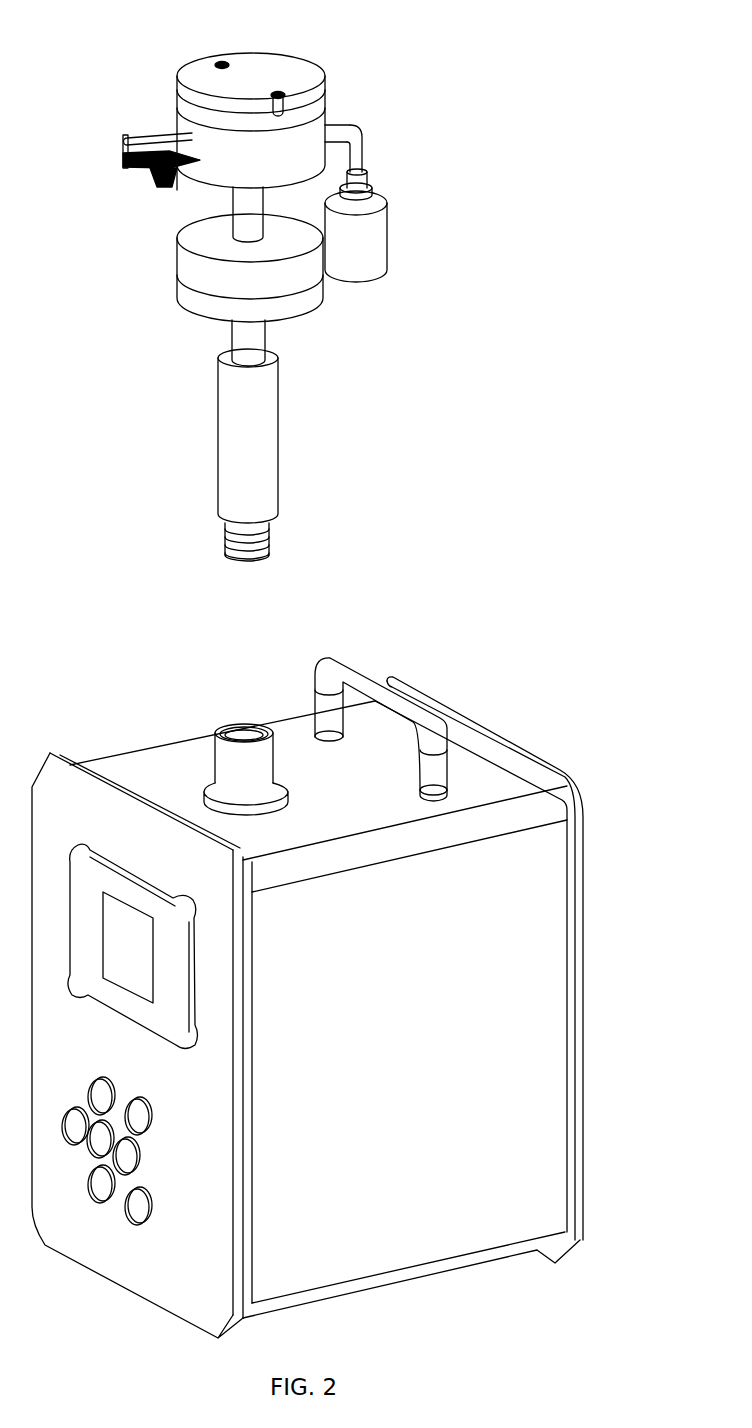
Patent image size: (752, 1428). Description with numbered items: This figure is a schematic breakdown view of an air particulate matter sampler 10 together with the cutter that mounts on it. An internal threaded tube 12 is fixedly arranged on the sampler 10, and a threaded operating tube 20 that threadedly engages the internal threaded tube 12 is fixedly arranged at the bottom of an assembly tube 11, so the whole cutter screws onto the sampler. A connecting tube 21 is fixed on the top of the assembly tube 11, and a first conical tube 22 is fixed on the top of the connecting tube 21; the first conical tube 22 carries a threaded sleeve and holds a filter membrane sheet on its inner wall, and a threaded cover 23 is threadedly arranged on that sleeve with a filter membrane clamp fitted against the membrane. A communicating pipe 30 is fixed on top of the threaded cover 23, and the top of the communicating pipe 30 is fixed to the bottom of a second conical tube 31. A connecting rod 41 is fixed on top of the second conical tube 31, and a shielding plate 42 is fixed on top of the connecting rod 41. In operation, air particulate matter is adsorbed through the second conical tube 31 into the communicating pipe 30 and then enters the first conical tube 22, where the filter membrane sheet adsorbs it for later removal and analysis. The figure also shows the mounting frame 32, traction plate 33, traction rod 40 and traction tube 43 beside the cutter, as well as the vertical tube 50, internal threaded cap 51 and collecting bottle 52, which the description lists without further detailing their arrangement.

The air particulate matter sampler 10 is at (583, 1001).
The assembly tube 11 is at (267, 438).
The internal threaded tube 12 is at (217, 738).
The threaded operating tube 20 is at (223, 540).
The connecting tube 21 is at (250, 348).
The first conical tube 22 is at (200, 307).
The threaded cover 23 is at (193, 263).
The communicating pipe 30 is at (253, 207).
The second conical tube 31 is at (324, 122).
The mounting frame 32 is at (135, 150).
The traction plate 33 is at (124, 136).
The traction rod 40 is at (148, 132).
The connecting rod 41 is at (300, 96).
The shielding plate 42 is at (252, 62).
The traction tube 43 is at (353, 130).
The vertical tube 50 is at (362, 157).
The internal threaded cap 51 is at (360, 185).
The collecting bottle 52 is at (370, 250).